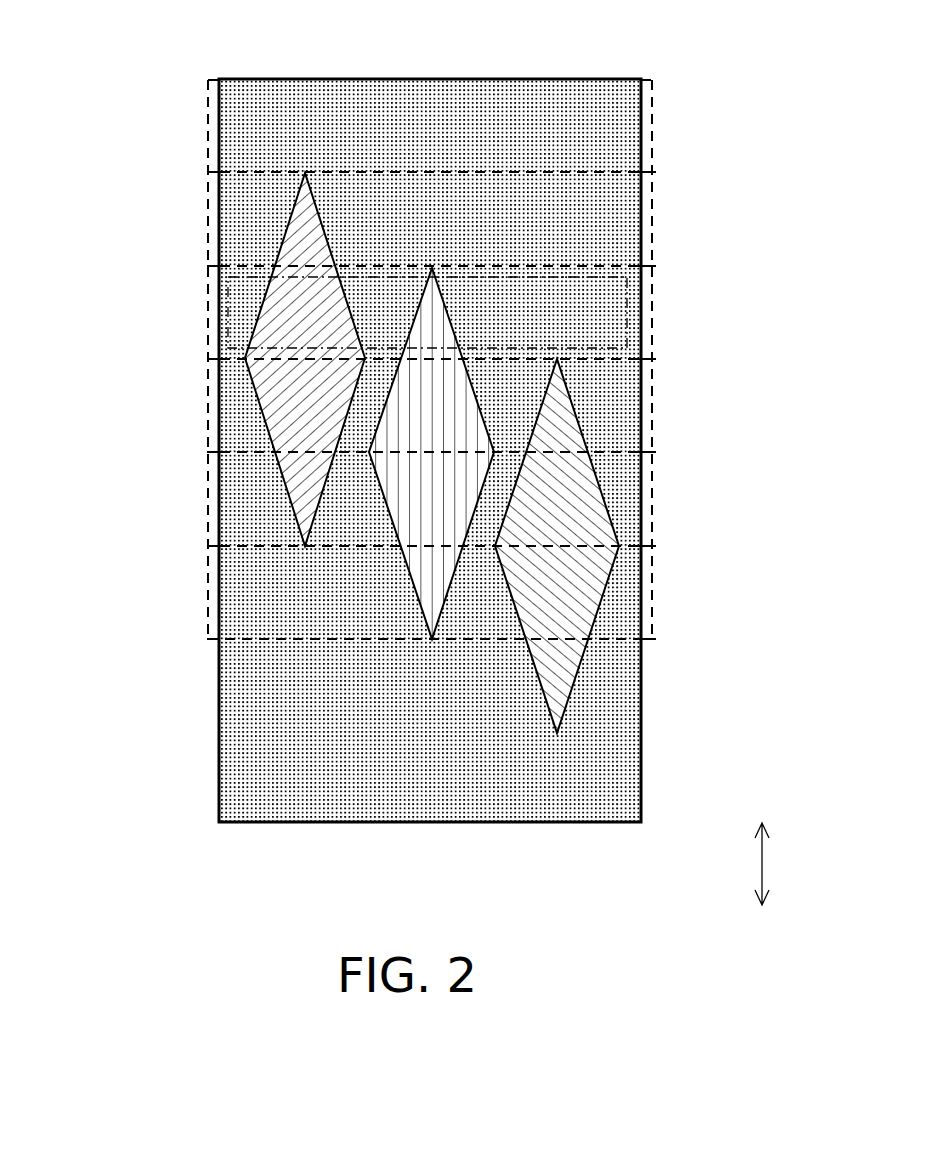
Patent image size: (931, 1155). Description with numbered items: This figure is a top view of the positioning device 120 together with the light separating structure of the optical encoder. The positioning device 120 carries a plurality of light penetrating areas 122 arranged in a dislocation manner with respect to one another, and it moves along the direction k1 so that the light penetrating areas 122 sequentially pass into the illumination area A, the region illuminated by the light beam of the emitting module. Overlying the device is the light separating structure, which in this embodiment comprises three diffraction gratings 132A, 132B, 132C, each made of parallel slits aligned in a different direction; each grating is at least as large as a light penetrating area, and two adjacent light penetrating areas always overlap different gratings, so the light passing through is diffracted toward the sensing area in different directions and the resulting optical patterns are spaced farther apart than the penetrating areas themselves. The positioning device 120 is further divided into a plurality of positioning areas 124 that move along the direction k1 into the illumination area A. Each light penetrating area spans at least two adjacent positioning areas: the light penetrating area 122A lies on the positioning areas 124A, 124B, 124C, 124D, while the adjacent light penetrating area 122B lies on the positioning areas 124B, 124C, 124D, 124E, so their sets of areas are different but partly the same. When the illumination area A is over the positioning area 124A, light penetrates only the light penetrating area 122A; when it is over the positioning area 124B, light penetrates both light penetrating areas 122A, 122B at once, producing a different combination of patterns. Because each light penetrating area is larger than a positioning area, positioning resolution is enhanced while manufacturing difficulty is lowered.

The positioning device 120 is at (603, 780).
The light penetrating areas 122 is at (650, 548).
The light penetrating area 122A is at (208, 359).
The light penetrating area 122B is at (273, 478).
The positioning areas 124 is at (650, 119).
The positioning area 124A is at (650, 213).
The positioning area 124B is at (650, 307).
The positioning area 124C is at (650, 400).
The positioning area 124D is at (650, 493).
The positioning area 124E is at (650, 587).
The diffraction grating 132A is at (300, 243).
The diffraction grating 132B is at (425, 565).
The diffraction grating 132C is at (568, 653).
The illumination area A is at (222, 311).
The direction k1 is at (774, 864).